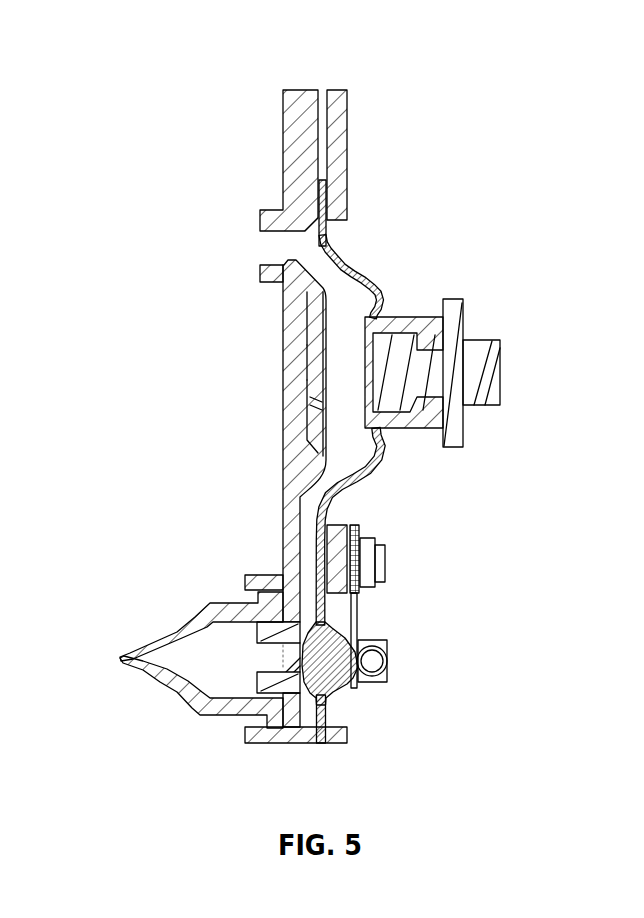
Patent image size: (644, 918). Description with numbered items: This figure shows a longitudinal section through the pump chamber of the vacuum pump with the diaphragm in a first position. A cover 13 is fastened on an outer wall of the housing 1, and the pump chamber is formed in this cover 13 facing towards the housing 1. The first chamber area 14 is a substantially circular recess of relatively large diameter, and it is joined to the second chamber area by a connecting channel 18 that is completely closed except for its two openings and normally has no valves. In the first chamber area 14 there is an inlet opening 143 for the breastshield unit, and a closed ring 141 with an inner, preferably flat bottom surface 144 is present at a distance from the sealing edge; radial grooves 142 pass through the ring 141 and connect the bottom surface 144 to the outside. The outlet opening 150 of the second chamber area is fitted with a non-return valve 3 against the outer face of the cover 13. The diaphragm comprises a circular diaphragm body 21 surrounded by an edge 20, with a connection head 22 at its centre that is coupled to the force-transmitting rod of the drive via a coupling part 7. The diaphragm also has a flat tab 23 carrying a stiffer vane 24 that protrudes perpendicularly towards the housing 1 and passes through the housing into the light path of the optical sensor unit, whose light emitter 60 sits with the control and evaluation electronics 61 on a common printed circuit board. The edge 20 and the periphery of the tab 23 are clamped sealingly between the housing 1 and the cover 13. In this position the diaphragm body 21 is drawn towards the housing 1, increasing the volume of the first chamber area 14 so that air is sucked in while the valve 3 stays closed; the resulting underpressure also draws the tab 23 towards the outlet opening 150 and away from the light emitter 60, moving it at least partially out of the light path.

The housing 1 is at (337, 132).
The cover 13 is at (296, 140).
The edge 20 is at (327, 203).
The diaphragm body 21 is at (351, 263).
The connection head 22 is at (407, 317).
The coupling part 7 is at (476, 372).
The first chamber area 14 is at (345, 395).
The inlet opening 143 is at (283, 261).
The radial grooves 142 is at (325, 342).
The bottom surface 144 is at (310, 363).
The ring 141 is at (317, 385).
The valve 3 is at (158, 640).
The outlet opening 150 is at (273, 657).
The connecting channel 18 is at (307, 560).
The control and evaluation electronics 61 is at (368, 560).
The light emitter 60 is at (370, 660).
The tab 23 is at (330, 737).
The vane 24 is at (338, 683).